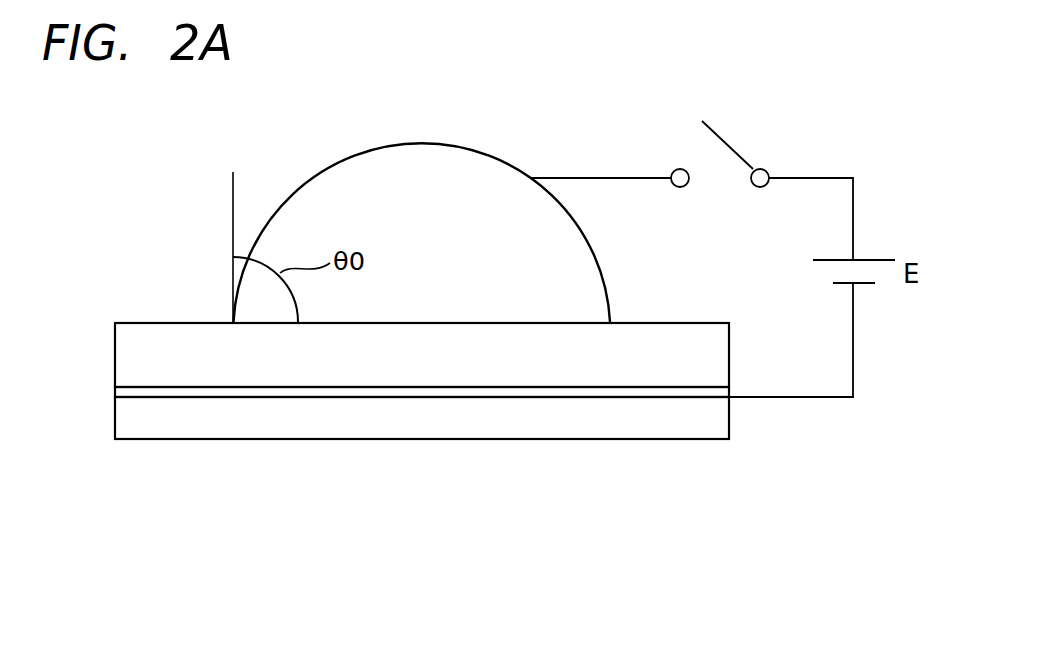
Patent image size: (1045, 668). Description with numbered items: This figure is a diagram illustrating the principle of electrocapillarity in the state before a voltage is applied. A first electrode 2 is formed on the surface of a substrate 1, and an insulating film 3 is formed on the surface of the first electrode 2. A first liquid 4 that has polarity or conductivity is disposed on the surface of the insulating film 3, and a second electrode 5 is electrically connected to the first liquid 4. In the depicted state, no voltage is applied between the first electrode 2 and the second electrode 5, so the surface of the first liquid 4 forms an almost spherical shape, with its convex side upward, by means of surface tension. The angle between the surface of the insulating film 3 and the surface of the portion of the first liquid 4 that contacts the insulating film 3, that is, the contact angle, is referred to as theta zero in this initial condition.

The substrate 1 is at (517, 421).
The first electrode 2 is at (632, 391).
The insulating film 3 is at (705, 349).
The first liquid 4 is at (413, 141).
The second electrode 5 is at (585, 178).